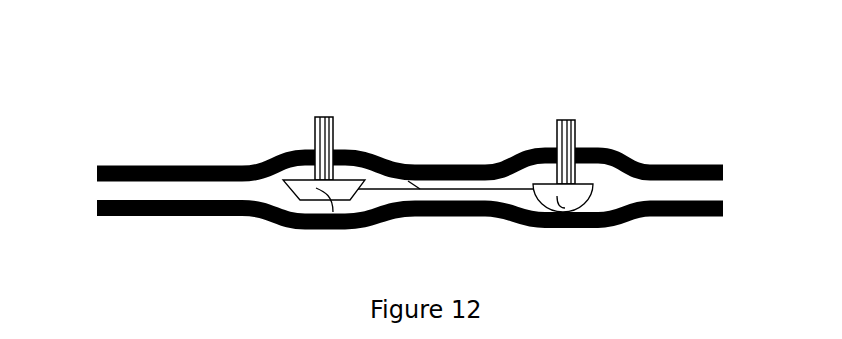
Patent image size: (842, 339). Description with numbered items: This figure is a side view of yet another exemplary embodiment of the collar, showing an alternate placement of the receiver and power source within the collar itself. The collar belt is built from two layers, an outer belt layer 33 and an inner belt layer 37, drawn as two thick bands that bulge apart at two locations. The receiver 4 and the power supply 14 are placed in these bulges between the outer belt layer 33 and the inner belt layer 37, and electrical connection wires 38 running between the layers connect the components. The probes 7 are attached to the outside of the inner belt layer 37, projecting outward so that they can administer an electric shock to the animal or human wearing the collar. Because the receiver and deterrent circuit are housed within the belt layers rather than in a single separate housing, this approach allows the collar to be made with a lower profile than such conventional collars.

The probes 7 is at (555, 119).
The inner belt layer 37 is at (619, 151).
The outer belt layer 33 is at (640, 217).
The receiver 4 is at (315, 230).
The electrical connection wires 38 is at (423, 160).
The power supply 14 is at (540, 230).